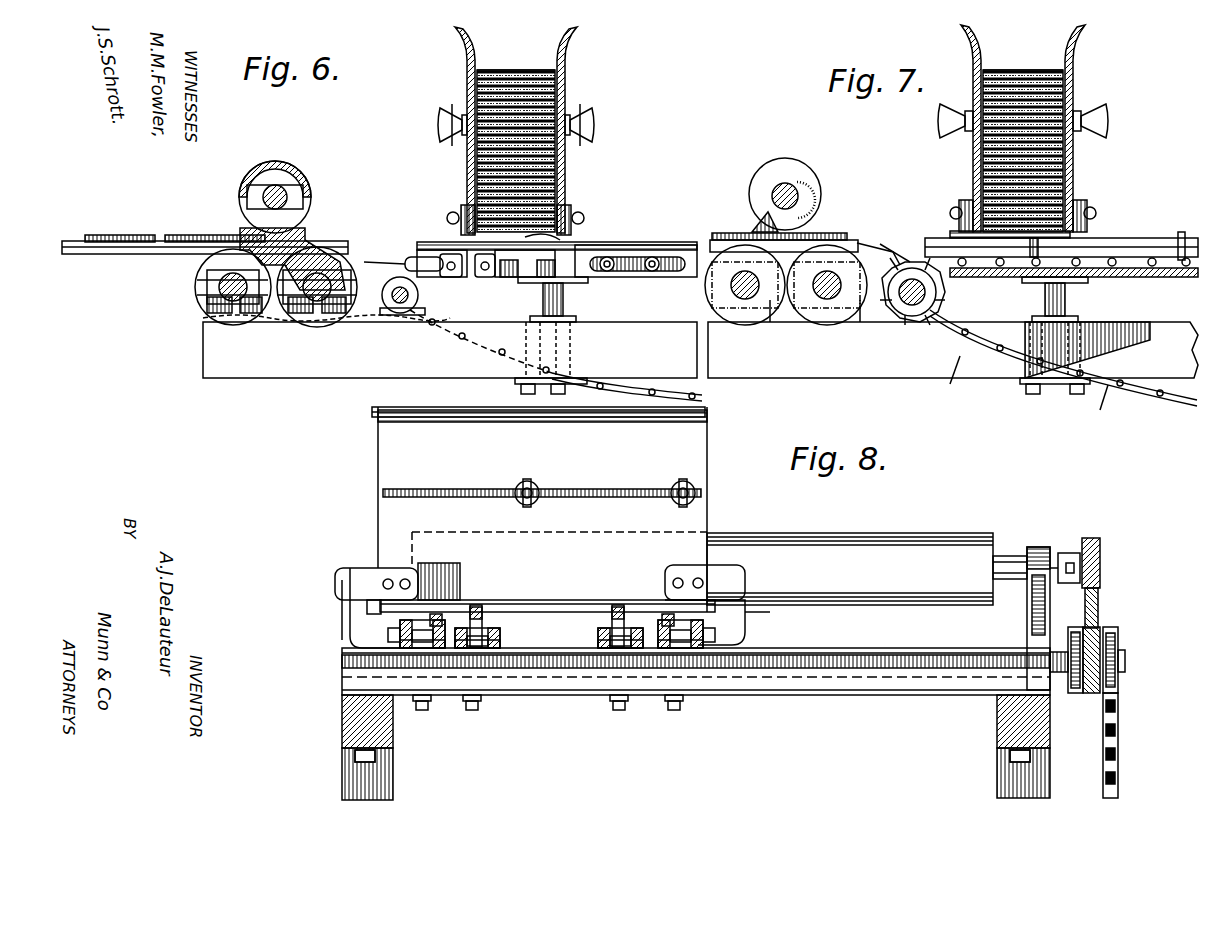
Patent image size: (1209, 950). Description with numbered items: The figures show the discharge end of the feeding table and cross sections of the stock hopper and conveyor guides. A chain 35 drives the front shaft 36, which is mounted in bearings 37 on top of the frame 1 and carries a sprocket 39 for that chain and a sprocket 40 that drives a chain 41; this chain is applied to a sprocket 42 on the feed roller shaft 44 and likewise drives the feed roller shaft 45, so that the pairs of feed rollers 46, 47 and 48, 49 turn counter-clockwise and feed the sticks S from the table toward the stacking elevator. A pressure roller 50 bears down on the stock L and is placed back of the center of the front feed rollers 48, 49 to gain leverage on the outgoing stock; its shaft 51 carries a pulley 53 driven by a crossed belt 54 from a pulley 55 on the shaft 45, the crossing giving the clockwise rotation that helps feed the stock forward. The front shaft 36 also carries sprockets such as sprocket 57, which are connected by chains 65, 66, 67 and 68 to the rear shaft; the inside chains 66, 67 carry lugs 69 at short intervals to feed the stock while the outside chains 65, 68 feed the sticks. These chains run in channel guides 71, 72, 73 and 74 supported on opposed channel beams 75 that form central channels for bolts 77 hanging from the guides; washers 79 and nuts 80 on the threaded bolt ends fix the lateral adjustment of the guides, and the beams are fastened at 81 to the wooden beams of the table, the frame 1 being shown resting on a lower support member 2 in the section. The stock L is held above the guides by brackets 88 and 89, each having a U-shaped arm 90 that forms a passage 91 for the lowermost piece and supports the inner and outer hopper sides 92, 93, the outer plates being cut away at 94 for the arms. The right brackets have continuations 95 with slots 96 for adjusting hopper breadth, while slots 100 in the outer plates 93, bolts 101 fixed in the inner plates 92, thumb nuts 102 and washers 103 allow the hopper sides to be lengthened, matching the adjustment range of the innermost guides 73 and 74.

In FIG. 6, the frame 1 is at (326, 370).
In FIG. 7, the frame 1 is at (764, 366).
In FIG. 8, the frame 1 is at (345, 712).
In FIG. 8, the support 2 is at (355, 780).
In FIG. 8, the chain 35 is at (1118, 752).
In FIG. 6, the front shaft 36 is at (418, 293).
In FIG. 7, the front shaft 36 is at (926, 284).
In FIG. 8, the front shaft 36 is at (896, 680).
In FIG. 6, the bearings 37 is at (425, 311).
In FIG. 8, the sprocket 39 is at (1120, 638).
In FIG. 8, the sprocket 40 is at (1072, 690).
In FIG. 6, the chain 41 is at (340, 326).
In FIG. 7, the sprocket 42 is at (880, 250).
In FIG. 6, the feed roller shaft 44 is at (305, 295).
In FIG. 7, the feed roller shaft 44 is at (830, 298).
In FIG. 6, the feed roller shaft 45 is at (225, 283).
In FIG. 7, the feed roller shaft 45 is at (748, 296).
In FIG. 7, the feed roller 46 is at (856, 312).
In FIG. 6, the feed roller 47 is at (400, 262).
In FIG. 7, the feed roller 48 is at (770, 312).
In FIG. 6, the feed roller 49 is at (205, 305).
In FIG. 6, the pressure roller 50 is at (275, 168).
In FIG. 7, the pressure roller 50 is at (768, 172).
In FIG. 8, the pressure roller 50 is at (888, 533).
In FIG. 6, the pressure roller shaft 51 is at (282, 192).
In FIG. 7, the pressure roller shaft 51 is at (792, 190).
In FIG. 8, the pulley 53 is at (1095, 540).
In FIG. 8, the crossed belt 54 is at (1099, 606).
In FIG. 8, the pulley 55 is at (1100, 630).
In FIG. 7, the sprocket 57 is at (940, 300).
In FIG. 8, the sprocket 57 is at (1018, 566).
In FIG. 6, the chain 65 is at (642, 388).
In FIG. 8, the chain 65 is at (392, 634).
In FIG. 7, the chain 66 is at (1172, 398).
In FIG. 8, the chain 66 is at (490, 634).
In FIG. 8, the chain 67 is at (600, 637).
In FIG. 8, the chain 68 is at (700, 630).
In FIG. 6, the lugs 69 is at (563, 230).
In FIG. 7, the lugs 69 is at (1182, 235).
In FIG. 8, the lugs 69 is at (488, 590).
In FIG. 8, the channel guide 71 is at (418, 648).
In FIG. 7, the channel guide 72 is at (1160, 276).
In FIG. 8, the channel guide 72 is at (488, 650).
In FIG. 8, the channel guide 73 is at (608, 650).
In FIG. 8, the channel guide 74 is at (665, 650).
In FIG. 6, the channel beam 75 is at (564, 298).
In FIG. 7, the channel beam 75 is at (1066, 300).
In FIG. 6, the bolts 77 is at (545, 330).
In FIG. 8, the bolts 77 is at (430, 704).
In FIG. 8, the washers 79 is at (482, 698).
In FIG. 8, the nuts 80 is at (472, 710).
In FIG. 6, the fastening 81 is at (517, 386).
In FIG. 7, the fastening 81 is at (1072, 392).
In FIG. 6, the bracket 88 is at (440, 254).
In FIG. 7, the bracket 88 is at (1061, 244).
In FIG. 8, the bracket 88 is at (375, 614).
In FIG. 8, the bracket 89 is at (750, 618).
In FIG. 8, the U-shaped arm 90 is at (340, 575).
In FIG. 8, the passage 91 is at (342, 598).
In FIG. 6, the inner hopper side 92 is at (478, 143).
In FIG. 7, the inner hopper side 92 is at (983, 72).
In FIG. 6, the outer hopper side 93 is at (468, 162).
In FIG. 7, the outer hopper side 93 is at (970, 45).
In FIG. 8, the outer hopper side 93 is at (376, 470).
In FIG. 8, the cut-away 94 is at (392, 560).
In FIG. 6, the continuation 95 is at (676, 258).
In FIG. 6, the slot 96 is at (640, 272).
In FIG. 8, the slot 100 is at (460, 489).
In FIG. 6, the bolt 101 is at (446, 127).
In FIG. 8, the bolt 101 is at (536, 486).
In FIG. 6, the thumb nut 102 is at (440, 118).
In FIG. 7, the thumb nut 102 is at (945, 115).
In FIG. 8, the thumb nut 102 is at (527, 480).
In FIG. 6, the washers 103 is at (452, 112).
In FIG. 6, the stock L is at (145, 243).
In FIG. 7, the stock L is at (826, 238).
In FIG. 8, the stock L is at (536, 600).
In FIG. 6, the sticks S is at (104, 246).
In FIG. 7, the sticks S is at (852, 248).
In FIG. 8, the sticks S is at (552, 622).